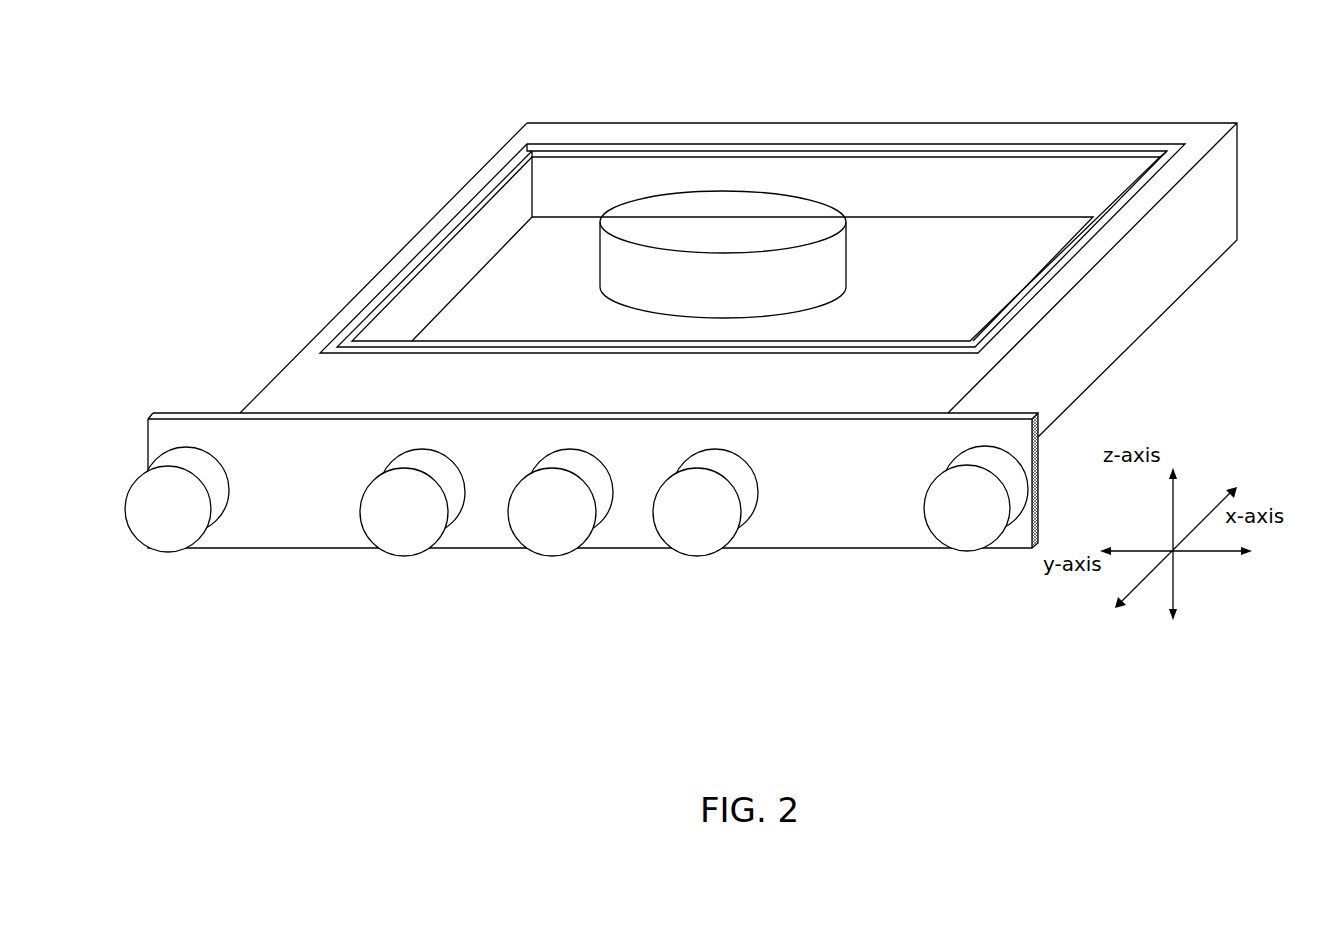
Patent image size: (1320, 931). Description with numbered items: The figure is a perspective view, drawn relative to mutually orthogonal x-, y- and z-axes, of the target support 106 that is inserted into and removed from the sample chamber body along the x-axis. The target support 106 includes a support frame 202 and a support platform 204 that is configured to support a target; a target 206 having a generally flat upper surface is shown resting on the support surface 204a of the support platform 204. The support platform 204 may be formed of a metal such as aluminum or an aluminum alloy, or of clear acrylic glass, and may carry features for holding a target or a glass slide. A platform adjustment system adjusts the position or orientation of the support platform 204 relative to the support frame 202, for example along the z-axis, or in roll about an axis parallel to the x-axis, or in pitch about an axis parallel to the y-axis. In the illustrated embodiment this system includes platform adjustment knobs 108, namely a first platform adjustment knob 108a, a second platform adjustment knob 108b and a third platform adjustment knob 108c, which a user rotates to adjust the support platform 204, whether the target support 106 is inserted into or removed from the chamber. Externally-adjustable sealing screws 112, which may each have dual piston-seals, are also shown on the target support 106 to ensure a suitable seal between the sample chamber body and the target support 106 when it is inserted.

The target support 106 is at (387, 85).
The support frame 202 is at (401, 247).
The support platform 204 is at (541, 155).
The support surface 204a is at (919, 280).
The target 206 is at (735, 222).
The platform adjustment knobs 108 is at (521, 568).
The first platform adjustment knob 108a is at (410, 543).
The second platform adjustment knob 108b is at (550, 543).
The third platform adjustment knob 108c is at (677, 520).
The sealing screws 112 is at (167, 535).